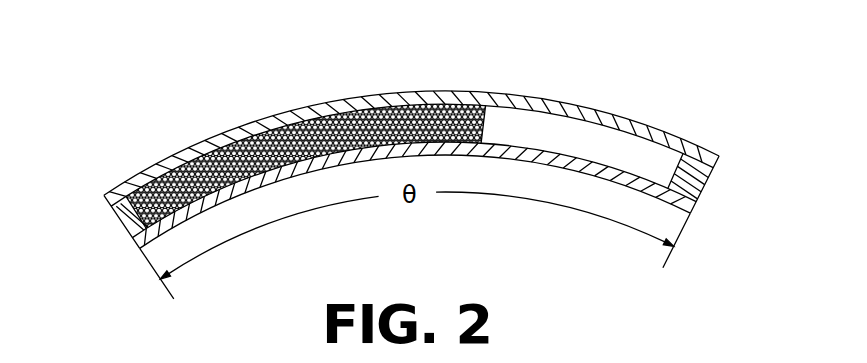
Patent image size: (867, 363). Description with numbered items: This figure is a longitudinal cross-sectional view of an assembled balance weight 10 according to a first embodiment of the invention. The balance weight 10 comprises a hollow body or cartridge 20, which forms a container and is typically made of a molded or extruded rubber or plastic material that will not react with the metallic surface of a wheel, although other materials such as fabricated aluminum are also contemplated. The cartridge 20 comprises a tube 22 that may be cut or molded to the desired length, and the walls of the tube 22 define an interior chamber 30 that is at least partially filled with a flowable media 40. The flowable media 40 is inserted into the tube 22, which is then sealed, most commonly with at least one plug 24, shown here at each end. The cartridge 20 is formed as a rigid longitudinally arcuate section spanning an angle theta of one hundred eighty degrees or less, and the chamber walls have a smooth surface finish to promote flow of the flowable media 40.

The balance weight 10 is at (588, 88).
The cartridge 20 is at (670, 130).
The tube 22 is at (290, 107).
The plug 24 is at (707, 183).
The interior chamber 30 is at (498, 120).
The flowable media 40 is at (233, 137).